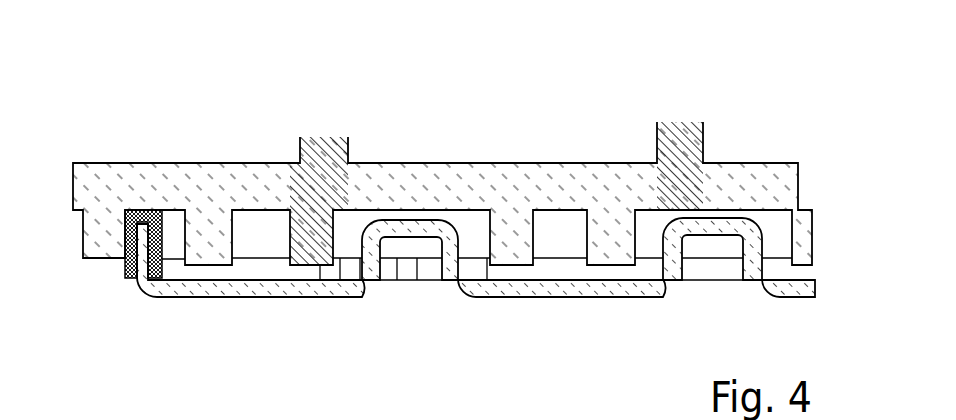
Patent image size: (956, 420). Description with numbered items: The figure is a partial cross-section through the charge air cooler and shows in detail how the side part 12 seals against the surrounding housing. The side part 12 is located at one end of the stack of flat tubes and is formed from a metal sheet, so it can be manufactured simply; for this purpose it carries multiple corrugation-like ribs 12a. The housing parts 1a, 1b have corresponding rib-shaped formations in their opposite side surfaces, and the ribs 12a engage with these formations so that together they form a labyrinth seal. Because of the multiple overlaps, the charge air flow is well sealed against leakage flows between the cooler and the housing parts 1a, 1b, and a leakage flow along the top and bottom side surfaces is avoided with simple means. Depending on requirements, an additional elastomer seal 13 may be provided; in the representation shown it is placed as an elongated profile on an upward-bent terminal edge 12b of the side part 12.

The housing part 1a is at (522, 173).
The housing part 1b is at (522, 173).
The side part 12 is at (535, 290).
The corrugation-like ribs 12a is at (415, 268).
The terminal edge 12b is at (145, 257).
The elastomer seal 13 is at (149, 212).